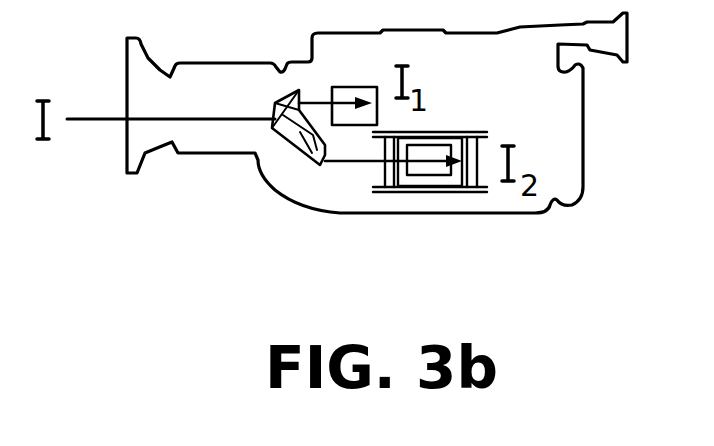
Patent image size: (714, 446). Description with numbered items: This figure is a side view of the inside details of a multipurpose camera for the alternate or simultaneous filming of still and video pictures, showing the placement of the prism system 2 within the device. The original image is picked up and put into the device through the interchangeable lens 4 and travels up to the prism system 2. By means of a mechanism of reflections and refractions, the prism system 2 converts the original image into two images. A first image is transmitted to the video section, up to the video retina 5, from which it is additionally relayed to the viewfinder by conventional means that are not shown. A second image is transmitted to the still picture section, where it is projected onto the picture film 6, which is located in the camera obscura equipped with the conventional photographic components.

The prism system 2 is at (300, 158).
The interchangeable lens 4 is at (215, 136).
The video retina 5 is at (350, 126).
The picture film 6 is at (445, 203).